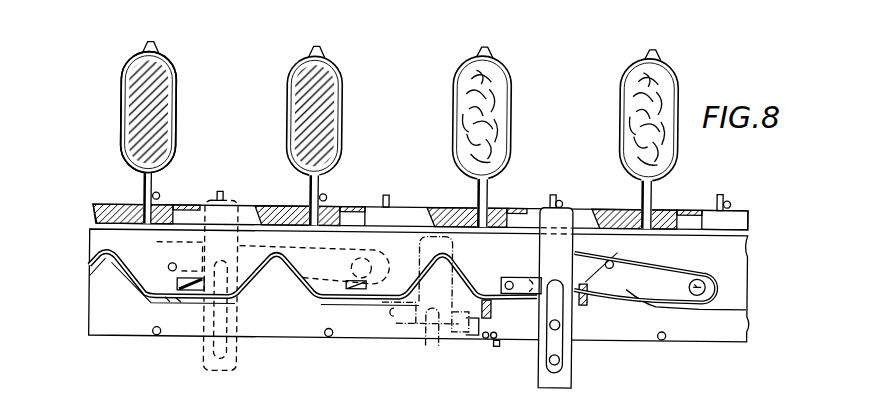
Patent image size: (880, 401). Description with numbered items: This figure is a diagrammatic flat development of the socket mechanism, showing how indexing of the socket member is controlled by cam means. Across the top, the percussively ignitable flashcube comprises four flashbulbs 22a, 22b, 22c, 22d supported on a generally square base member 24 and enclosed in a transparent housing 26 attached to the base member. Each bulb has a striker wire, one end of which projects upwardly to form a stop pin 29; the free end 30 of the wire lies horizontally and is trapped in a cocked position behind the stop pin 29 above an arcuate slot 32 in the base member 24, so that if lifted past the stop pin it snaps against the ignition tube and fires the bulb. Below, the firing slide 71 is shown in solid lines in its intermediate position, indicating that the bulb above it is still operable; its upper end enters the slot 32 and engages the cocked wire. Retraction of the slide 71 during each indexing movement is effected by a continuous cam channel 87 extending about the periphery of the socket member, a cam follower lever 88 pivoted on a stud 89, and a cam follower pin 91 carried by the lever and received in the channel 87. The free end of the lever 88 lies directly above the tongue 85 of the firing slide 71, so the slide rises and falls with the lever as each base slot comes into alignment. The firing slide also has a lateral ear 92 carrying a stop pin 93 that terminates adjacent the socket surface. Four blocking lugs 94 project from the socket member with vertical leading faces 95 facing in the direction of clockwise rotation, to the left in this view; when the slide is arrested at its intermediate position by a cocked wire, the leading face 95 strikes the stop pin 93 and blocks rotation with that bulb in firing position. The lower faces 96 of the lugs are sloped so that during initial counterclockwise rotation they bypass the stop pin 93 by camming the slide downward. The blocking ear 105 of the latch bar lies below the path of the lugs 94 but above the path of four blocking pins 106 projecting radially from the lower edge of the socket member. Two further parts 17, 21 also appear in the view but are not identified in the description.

The housing 17 is at (752, 261).
The end block 21 is at (749, 215).
The flashbulb 22a is at (152, 56).
The flashbulb 22b is at (322, 58).
The flashbulb 22c is at (489, 57).
The flashbulb 22d is at (656, 58).
The base member 24 is at (92, 212).
The transparent housing 26 is at (108, 107).
The stop pin 29 is at (221, 193).
The free end of striker wire 30 is at (160, 192).
The arcuate slot 32 is at (184, 223).
The firing slide 71 is at (240, 338).
The tongue 85 is at (250, 270).
The cam channel 87 is at (122, 275).
The cam follower lever 88 is at (308, 240).
The stud 89 is at (375, 243).
The cam follower pin 91 is at (285, 280).
The lateral ear 92 is at (188, 260).
The stop pin 93 is at (168, 263).
The blocking lug 94 is at (177, 281).
The leading face 95 is at (170, 297).
The sloped lower face 96 is at (180, 299).
The blocking ear 105 is at (487, 340).
The blocking pin 106 is at (157, 333).